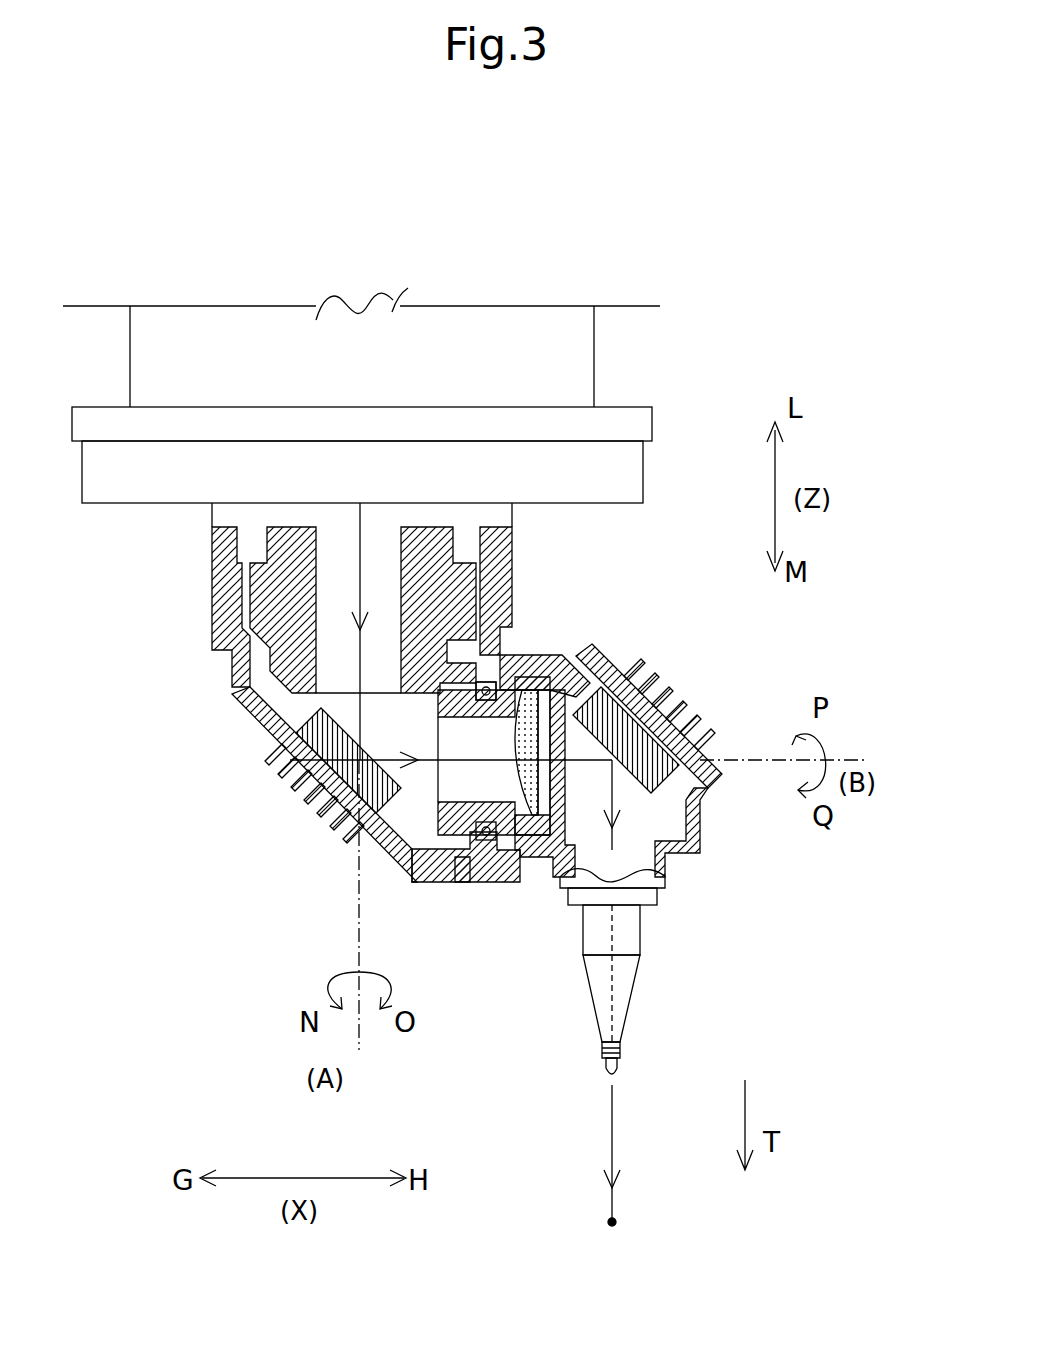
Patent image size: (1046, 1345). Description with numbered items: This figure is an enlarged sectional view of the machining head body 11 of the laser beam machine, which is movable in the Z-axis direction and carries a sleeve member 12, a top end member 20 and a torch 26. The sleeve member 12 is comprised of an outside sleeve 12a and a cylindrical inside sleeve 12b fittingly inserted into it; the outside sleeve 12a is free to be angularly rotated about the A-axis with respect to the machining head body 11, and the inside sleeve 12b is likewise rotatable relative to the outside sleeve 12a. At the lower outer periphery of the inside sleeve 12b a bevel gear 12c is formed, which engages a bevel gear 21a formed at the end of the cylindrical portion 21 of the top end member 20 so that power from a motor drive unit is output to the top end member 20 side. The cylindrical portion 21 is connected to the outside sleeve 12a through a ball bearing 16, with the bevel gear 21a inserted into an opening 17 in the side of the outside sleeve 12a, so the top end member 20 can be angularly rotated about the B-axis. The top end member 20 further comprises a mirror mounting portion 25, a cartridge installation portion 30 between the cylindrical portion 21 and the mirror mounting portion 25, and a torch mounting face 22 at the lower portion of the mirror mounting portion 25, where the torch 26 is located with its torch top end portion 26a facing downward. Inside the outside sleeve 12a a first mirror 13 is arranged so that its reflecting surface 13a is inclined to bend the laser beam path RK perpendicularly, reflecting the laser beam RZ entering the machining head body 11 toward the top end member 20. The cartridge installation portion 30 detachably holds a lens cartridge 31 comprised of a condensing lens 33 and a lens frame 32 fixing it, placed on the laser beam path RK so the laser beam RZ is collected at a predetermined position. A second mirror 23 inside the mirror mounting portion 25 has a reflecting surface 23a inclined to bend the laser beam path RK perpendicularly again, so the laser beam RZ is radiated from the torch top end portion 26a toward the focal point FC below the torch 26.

The machining head body 11 is at (703, 447).
The sleeve member 12 is at (367, 700).
The outside sleeve 12a is at (208, 572).
The inside sleeve 12b is at (504, 553).
The bevel gear 12c is at (234, 688).
The first mirror 13 is at (292, 738).
The reflecting surface 13a is at (346, 855).
The ball bearing 16 is at (440, 703).
The opening 17 is at (490, 682).
The top end member 20 is at (679, 742).
The cylindrical portion 21 is at (452, 896).
The bevel gear 21a is at (450, 884).
The torch mounting face 22 is at (668, 880).
The second mirror 23 is at (670, 814).
The reflecting surface 23a is at (622, 712).
The mirror mounting portion 25 is at (710, 797).
The torch 26 is at (640, 985).
The torch top end portion 26a is at (620, 1068).
The cartridge installation portion 30 is at (532, 657).
The lens cartridge 31 is at (512, 787).
The lens frame 32 is at (540, 882).
The condensing lens 33 is at (548, 740).
The laser beam RZ is at (336, 526).
The laser beam path RK is at (332, 610).
The focal point FC is at (606, 1221).